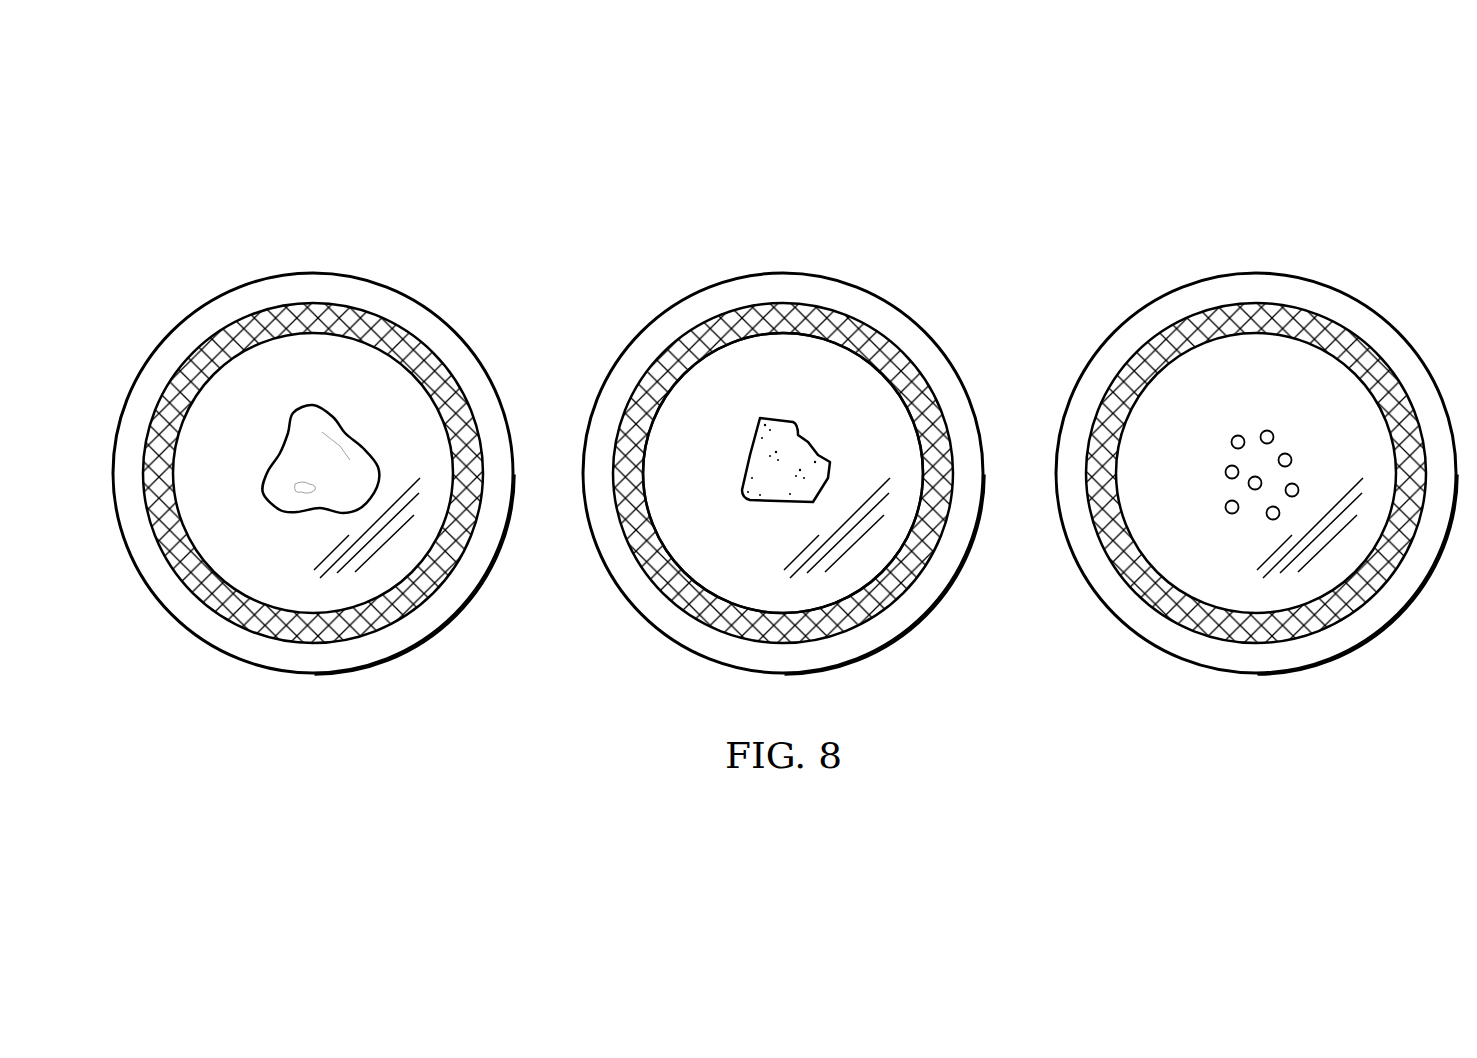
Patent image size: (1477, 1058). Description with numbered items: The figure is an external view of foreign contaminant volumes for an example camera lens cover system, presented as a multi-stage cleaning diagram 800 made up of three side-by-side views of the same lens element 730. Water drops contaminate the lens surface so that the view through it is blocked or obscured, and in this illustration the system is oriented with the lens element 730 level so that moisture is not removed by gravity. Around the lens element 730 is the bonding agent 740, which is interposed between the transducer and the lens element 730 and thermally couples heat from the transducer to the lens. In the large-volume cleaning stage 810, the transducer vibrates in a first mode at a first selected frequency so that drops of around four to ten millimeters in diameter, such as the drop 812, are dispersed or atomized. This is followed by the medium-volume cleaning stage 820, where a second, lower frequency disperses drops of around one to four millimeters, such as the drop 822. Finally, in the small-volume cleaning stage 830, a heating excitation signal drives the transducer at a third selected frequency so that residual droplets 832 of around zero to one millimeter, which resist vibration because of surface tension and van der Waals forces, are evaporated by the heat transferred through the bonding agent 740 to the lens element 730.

The multi-stage cleaning diagram 800 is at (1140, 158).
The large-volume cleaning stage 810 is at (211, 271).
The drop 812 is at (300, 407).
The medium-volume cleaning stage 820 is at (684, 271).
The drop 822 is at (752, 450).
The small-volume cleaning stage 830 is at (1357, 272).
The droplets 832 is at (1238, 435).
The lens element 730 is at (642, 615).
The bonding agent 740 is at (903, 600).